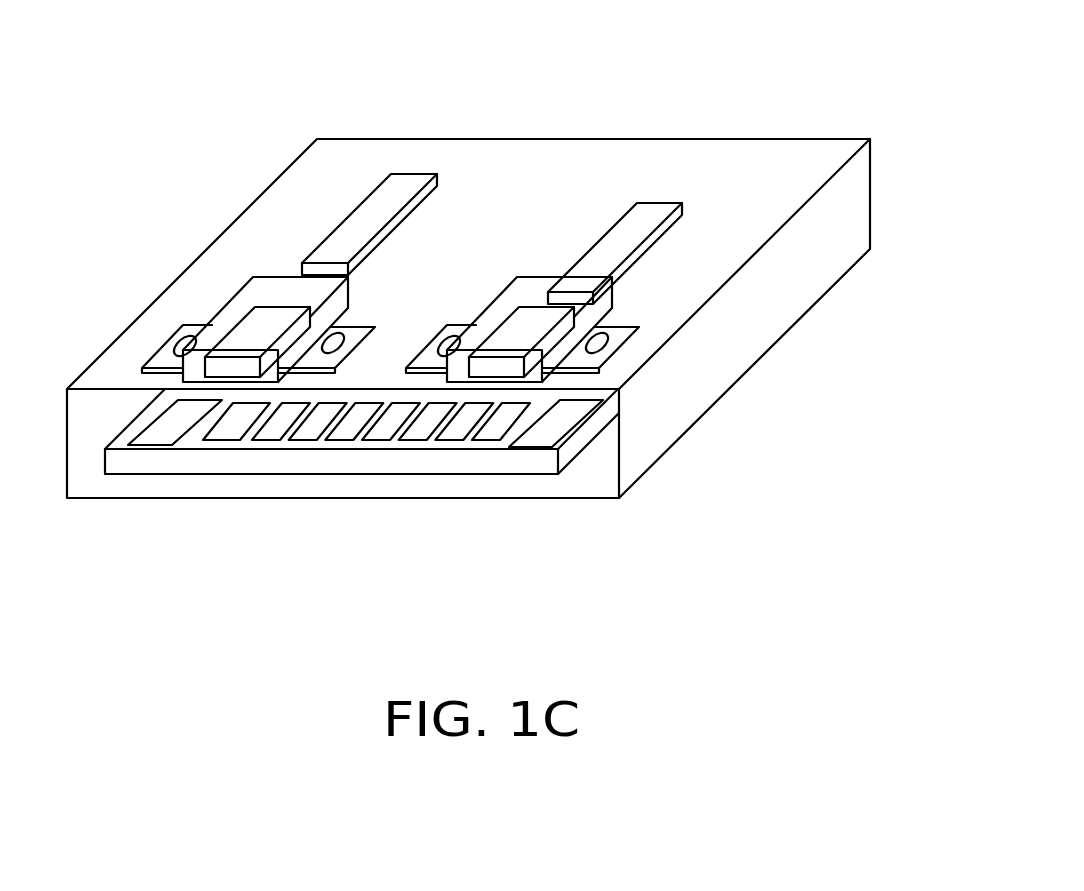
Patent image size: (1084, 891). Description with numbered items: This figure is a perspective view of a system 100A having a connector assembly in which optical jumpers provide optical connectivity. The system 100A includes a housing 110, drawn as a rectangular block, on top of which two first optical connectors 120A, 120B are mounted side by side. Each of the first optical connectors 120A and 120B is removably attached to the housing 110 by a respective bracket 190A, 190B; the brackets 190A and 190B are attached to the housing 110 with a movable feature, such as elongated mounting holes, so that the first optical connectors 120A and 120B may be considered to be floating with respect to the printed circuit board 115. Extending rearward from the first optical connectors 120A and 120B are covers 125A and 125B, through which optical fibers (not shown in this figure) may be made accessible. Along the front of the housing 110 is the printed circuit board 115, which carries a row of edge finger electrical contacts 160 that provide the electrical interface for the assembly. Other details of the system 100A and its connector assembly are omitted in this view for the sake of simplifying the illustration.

The system 100A is at (828, 83).
The housing 110 is at (872, 195).
The printed circuit board 115 is at (267, 455).
The edge finger electrical contacts 160 is at (415, 420).
The first optical connector 120A is at (263, 330).
The cover 125A is at (350, 235).
The bracket 190A is at (152, 337).
The first optical connector 120B is at (528, 329).
The cover 125B is at (657, 204).
The bracket 190B is at (634, 360).